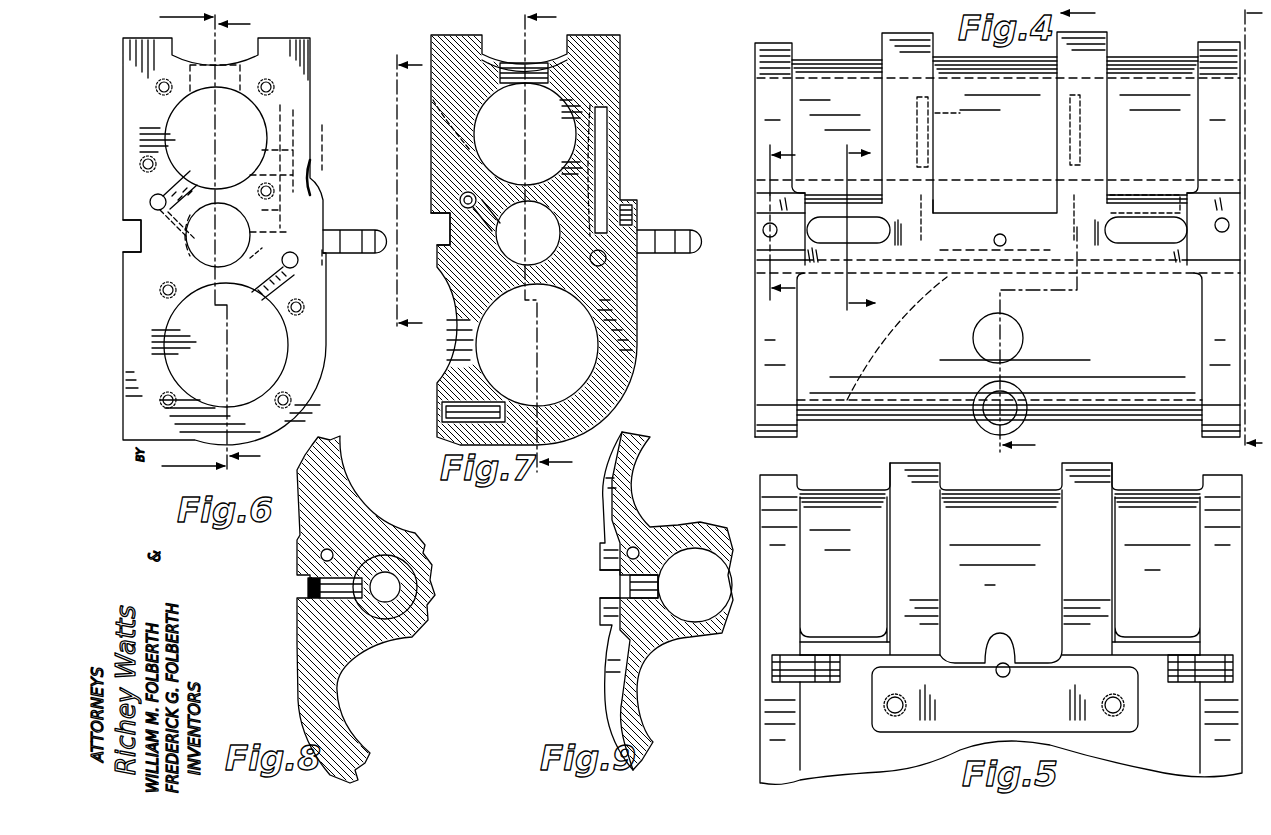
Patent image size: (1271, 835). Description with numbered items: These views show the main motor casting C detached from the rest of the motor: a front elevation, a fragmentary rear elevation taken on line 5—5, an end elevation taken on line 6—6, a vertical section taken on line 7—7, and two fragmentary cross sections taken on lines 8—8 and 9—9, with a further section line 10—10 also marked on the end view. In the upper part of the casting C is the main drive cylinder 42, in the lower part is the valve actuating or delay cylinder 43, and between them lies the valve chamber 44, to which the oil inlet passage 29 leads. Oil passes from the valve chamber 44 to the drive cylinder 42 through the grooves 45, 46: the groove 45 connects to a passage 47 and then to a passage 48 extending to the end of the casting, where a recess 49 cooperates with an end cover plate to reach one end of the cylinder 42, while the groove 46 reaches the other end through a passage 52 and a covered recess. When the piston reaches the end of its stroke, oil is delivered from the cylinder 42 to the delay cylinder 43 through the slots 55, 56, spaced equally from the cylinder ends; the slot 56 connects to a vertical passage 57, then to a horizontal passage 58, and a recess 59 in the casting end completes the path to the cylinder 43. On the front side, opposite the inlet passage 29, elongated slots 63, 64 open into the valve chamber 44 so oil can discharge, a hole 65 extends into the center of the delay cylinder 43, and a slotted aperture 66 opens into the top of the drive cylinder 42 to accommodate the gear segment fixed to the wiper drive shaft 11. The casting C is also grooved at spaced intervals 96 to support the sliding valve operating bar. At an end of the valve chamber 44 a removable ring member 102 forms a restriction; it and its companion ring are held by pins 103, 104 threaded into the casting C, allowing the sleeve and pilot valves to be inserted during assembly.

In FIG. 7, the section line 5— 5 is at (409, 192).
In FIG. 4, the section line 6— 6 is at (1253, 227).
In FIG. 4, the section line 7— 7 is at (1057, 229).
In FIG. 4, the section line 8— 8 is at (793, 222).
In FIG. 4, the section line 9— 9 is at (862, 229).
In FIG. 6, the section line 10— 10 is at (179, 241).
In FIG. 6, the wiper drive shaft 11 is at (252, 239).
In FIG. 7, the wiper drive shaft 11 is at (563, 239).
In FIG. 4, the main motor casting C is at (826, 72).
In FIG. 5, the main motor casting C is at (822, 500).
In FIG. 6, the oil inlet passage 29 is at (258, 262).
In FIG. 7, the oil inlet passage 29 is at (634, 196).
In FIG. 4, the oil inlet passage 29 is at (1006, 236).
In FIG. 5, the oil inlet passage 29 is at (998, 676).
In FIG. 6, the main drive chamber or cylinder 42 is at (248, 118).
In FIG. 7, the main drive chamber or cylinder 42 is at (570, 78).
In FIG. 4, the main drive chamber or cylinder 42 is at (955, 185).
In FIG. 8, the main drive chamber or cylinder 42 is at (338, 510).
In FIG. 9, the main drive chamber or cylinder 42 is at (648, 512).
In FIG. 6, the valve actuating or delay chamber or cylinder 43 is at (275, 340).
In FIG. 7, the valve actuating or delay chamber or cylinder 43 is at (575, 358).
In FIG. 4, the valve actuating or delay chamber or cylinder 43 is at (950, 360).
In FIG. 8, the valve actuating or delay chamber or cylinder 43 is at (338, 680).
In FIG. 9, the valve actuating or delay chamber or cylinder 43 is at (640, 682).
In FIG. 6, the valve chamber 44 is at (253, 228).
In FIG. 7, the valve chamber 44 is at (590, 190).
In FIG. 4, the valve chamber 44 is at (958, 260).
In FIG. 8, the valve chamber 44 is at (412, 575).
In FIG. 9, the valve chamber 44 is at (706, 610).
In FIG. 6, the slot or groove 45 is at (217, 235).
In FIG. 7, the slot or groove 45 is at (540, 217).
In FIG. 4, the slot or groove 45 is at (1110, 200).
In FIG. 4, the slot or groove 46 is at (935, 208).
In FIG. 7, the passage 47 is at (470, 222).
In FIG. 6, the passage 48 is at (150, 203).
In FIG. 7, the passage 48 is at (455, 186).
In FIG. 6, the recess 49 is at (188, 190).
In FIG. 7, the recess 49 is at (440, 150).
In FIG. 8, the passage 52 is at (320, 552).
In FIG. 9, the passage 52 is at (612, 550).
In FIG. 4, the slot 55 is at (1057, 113).
In FIG. 6, the slot 56 is at (270, 152).
In FIG. 7, the slot 56 is at (570, 134).
In FIG. 4, the slot 56 is at (1078, 146).
In FIG. 6, the vertical passage 57 is at (312, 183).
In FIG. 7, the vertical passage 57 is at (600, 150).
In FIG. 6, the horizontally extending passage 58 is at (298, 262).
In FIG. 7, the horizontally extending passage 58 is at (606, 262).
In FIG. 6, the groove or recess 59 is at (300, 282).
In FIG. 7, the groove or recess 59 is at (580, 310).
In FIG. 4, the elongated slot 63 is at (1153, 228).
In FIG. 4, the elongated slot 64 is at (873, 230).
In FIG. 9, the elongated slot 64 is at (648, 586).
In FIG. 7, the hole 65 is at (462, 336).
In FIG. 4, the hole 65 is at (1010, 336).
In FIG. 7, the slotted aperture 66 is at (515, 70).
In FIG. 6, the grooves 96 is at (141, 232).
In FIG. 7, the grooves 96 is at (446, 232).
In FIG. 4, the grooves 96 is at (763, 226).
In FIG. 8, the grooves 96 is at (305, 585).
In FIG. 9, the grooves 96 is at (612, 584).
In FIG. 8, the ring member 102 is at (400, 600).
In FIG. 4, the pin 103 is at (760, 245).
In FIG. 8, the pin 103 is at (332, 594).
In FIG. 4, the pin 104 is at (1222, 240).